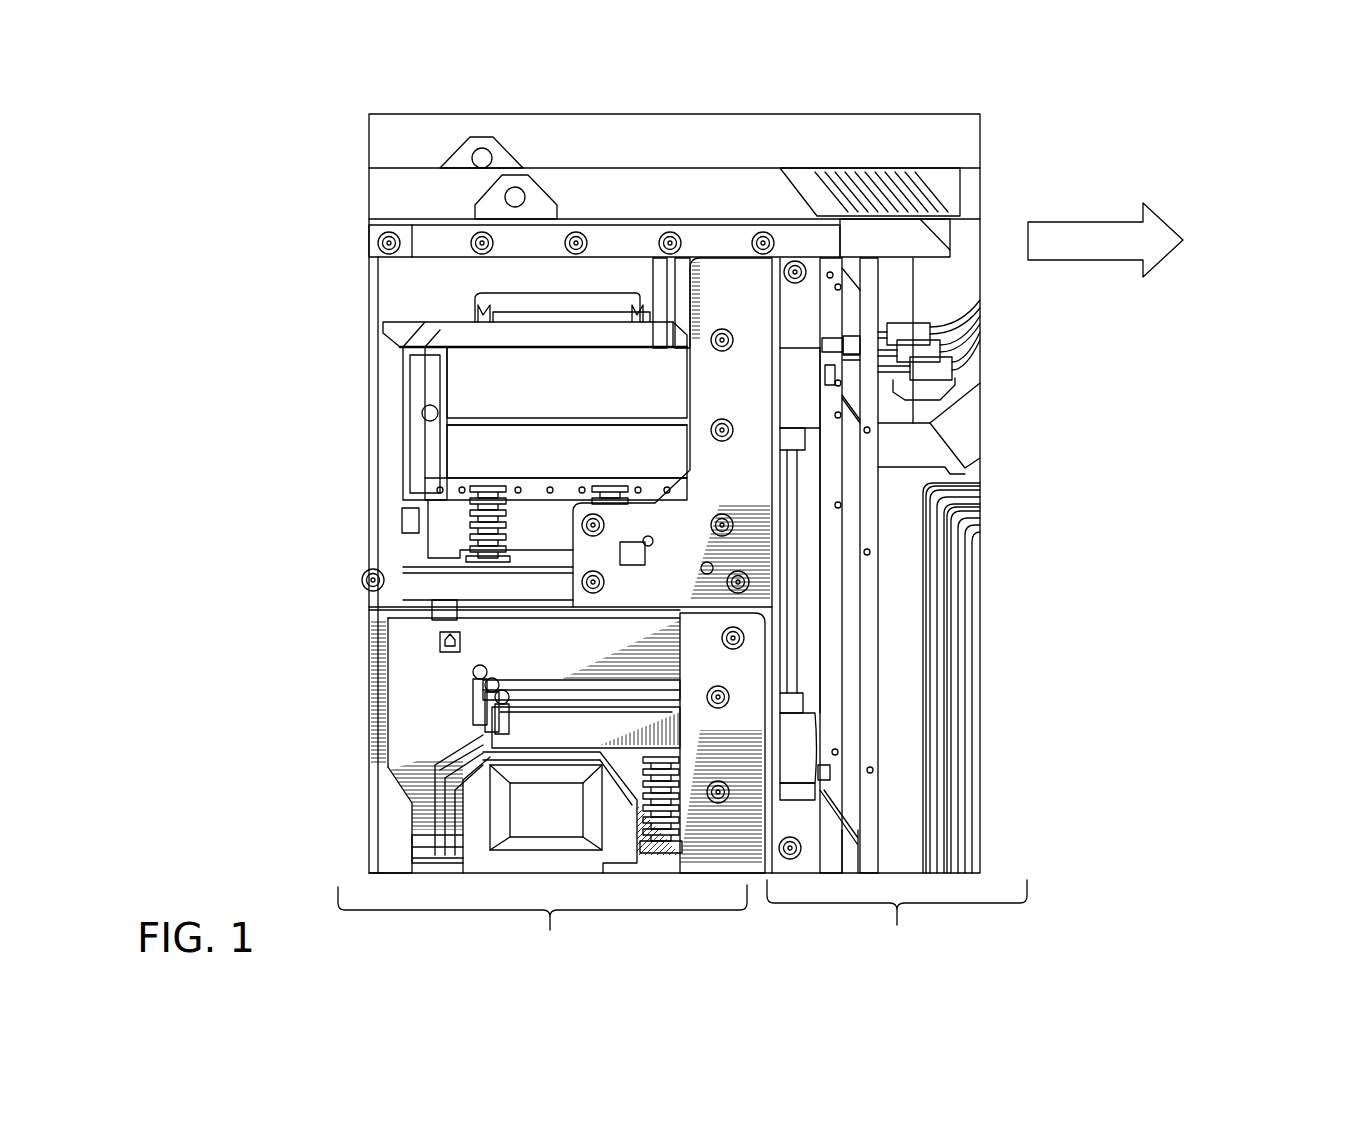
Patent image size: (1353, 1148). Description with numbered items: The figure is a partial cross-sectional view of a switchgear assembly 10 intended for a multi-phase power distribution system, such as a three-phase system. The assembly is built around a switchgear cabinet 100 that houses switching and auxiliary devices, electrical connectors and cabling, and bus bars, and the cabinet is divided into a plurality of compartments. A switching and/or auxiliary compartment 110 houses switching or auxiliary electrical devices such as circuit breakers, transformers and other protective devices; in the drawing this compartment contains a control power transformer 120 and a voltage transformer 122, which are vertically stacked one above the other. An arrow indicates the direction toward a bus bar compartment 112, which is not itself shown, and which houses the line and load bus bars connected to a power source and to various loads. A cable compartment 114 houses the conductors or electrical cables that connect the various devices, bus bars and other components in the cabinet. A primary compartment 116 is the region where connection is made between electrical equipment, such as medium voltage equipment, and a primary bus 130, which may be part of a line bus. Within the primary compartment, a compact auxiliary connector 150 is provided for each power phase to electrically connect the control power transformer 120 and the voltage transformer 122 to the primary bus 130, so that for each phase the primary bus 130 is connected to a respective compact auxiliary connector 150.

The switchgear assembly 10 is at (190, 104).
The switchgear cabinet 100 is at (398, 195).
The switching and/or auxiliary compartment 110 is at (542, 924).
The bus bar compartment 112 is at (1160, 273).
The cable compartment 114 is at (897, 919).
The primary compartment 116 is at (845, 578).
The control power transformer 120 is at (540, 394).
The voltage transformer 122 is at (430, 731).
The primary bus 130 is at (968, 383).
The compact auxiliary connector 150 is at (790, 350).